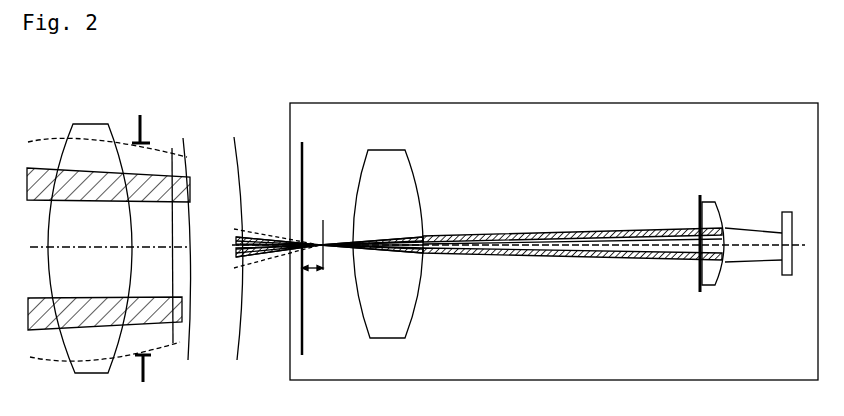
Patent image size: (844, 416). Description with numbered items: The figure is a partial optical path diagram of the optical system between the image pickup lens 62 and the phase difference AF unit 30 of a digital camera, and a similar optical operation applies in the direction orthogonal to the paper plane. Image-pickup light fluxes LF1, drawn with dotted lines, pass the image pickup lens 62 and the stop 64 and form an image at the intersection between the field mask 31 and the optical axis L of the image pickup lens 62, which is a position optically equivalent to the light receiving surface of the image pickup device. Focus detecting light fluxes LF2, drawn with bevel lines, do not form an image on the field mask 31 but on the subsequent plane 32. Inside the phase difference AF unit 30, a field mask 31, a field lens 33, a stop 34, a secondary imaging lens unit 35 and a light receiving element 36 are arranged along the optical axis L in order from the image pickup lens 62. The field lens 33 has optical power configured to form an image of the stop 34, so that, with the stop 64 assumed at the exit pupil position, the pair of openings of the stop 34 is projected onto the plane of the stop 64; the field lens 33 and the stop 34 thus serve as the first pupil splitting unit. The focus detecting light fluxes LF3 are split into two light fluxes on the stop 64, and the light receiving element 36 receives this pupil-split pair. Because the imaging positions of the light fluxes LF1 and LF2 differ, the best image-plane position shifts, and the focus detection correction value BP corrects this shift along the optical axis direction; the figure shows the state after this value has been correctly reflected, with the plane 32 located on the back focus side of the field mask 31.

The image pickup lens 62 is at (88, 124).
The stop 64 is at (138, 128).
The image-pickup light fluxes LF1 is at (171, 151).
The focus detecting light fluxes LF2 is at (150, 172).
The focus detecting light fluxes LF3 is at (518, 232).
The phase difference AF unit 30 is at (439, 111).
The field mask 31 is at (303, 336).
The plane 32 is at (323, 222).
The focus detection correction value BP is at (320, 272).
The field lens 33 is at (374, 149).
The optical axis L is at (620, 236).
The stop 34 is at (698, 196).
The secondary imaging lens unit 35 is at (715, 202).
The light receiving element 36 is at (787, 212).